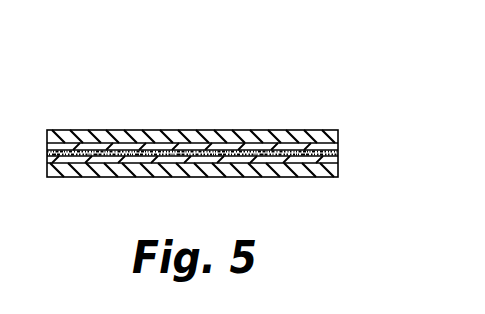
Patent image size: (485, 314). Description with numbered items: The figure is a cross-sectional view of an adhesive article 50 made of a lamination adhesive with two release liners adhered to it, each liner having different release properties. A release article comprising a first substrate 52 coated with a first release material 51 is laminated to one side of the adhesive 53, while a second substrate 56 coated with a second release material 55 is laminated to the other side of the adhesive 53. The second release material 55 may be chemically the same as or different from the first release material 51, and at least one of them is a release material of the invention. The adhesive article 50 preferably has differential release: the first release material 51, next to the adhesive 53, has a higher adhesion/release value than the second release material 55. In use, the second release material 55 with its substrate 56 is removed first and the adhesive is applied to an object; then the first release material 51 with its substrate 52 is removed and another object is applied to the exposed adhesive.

The adhesive article 50 is at (285, 87).
The first release material 51 is at (338, 147).
The first substrate 52 is at (190, 138).
The adhesive 53 is at (338, 151).
The second release material 55 is at (338, 163).
The second substrate 56 is at (175, 172).